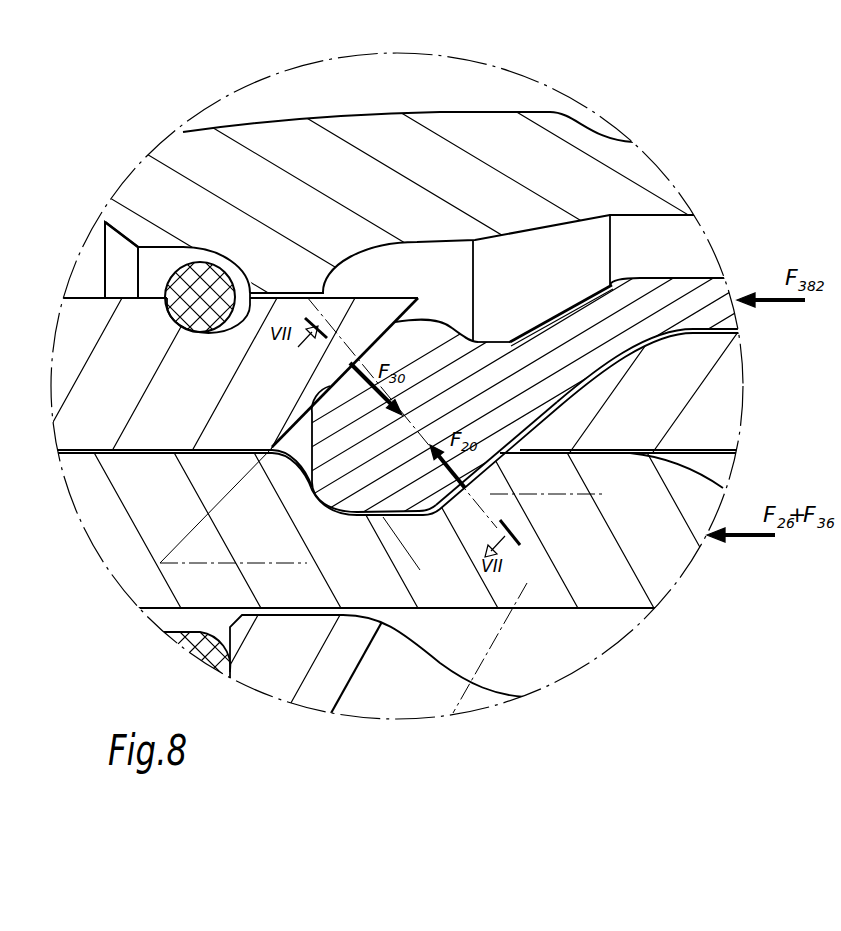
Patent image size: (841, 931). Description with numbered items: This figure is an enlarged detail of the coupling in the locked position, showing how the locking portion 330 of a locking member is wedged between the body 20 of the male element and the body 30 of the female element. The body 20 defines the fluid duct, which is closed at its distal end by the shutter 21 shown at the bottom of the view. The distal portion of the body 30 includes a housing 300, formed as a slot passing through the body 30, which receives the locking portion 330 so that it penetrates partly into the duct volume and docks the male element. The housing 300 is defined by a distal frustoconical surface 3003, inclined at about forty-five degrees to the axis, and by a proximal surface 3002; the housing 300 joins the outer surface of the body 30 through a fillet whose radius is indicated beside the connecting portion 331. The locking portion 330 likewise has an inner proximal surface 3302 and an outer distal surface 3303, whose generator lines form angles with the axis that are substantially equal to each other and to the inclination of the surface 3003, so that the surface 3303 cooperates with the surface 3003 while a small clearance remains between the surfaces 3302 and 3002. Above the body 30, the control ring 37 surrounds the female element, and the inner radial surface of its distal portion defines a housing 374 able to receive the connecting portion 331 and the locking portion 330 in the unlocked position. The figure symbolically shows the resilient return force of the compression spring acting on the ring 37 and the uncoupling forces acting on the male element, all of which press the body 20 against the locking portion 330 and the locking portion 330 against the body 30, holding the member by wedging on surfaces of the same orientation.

The body of the male element 20 is at (390, 525).
The shutter 21 is at (365, 665).
The body of the female element 30 is at (389, 376).
The control ring 37 is at (410, 294).
The locking portion 330 is at (411, 427).
The connecting portion 331 is at (530, 364).
The housing 374 is at (675, 250).
The proximal surface of the housing 3002 is at (530, 434).
The distal frustoconical surface of the housing 3003 is at (371, 345).
The housing 300 is at (634, 348).
The inner proximal surface 3302 is at (550, 495).
The outer distal surface 3303 is at (267, 563).